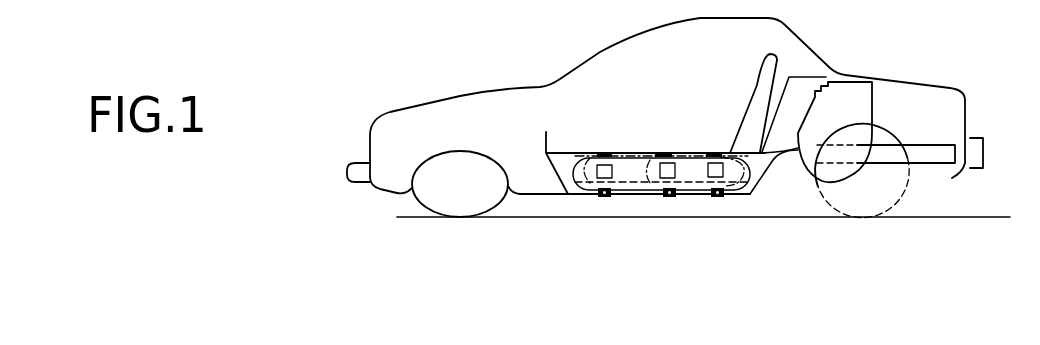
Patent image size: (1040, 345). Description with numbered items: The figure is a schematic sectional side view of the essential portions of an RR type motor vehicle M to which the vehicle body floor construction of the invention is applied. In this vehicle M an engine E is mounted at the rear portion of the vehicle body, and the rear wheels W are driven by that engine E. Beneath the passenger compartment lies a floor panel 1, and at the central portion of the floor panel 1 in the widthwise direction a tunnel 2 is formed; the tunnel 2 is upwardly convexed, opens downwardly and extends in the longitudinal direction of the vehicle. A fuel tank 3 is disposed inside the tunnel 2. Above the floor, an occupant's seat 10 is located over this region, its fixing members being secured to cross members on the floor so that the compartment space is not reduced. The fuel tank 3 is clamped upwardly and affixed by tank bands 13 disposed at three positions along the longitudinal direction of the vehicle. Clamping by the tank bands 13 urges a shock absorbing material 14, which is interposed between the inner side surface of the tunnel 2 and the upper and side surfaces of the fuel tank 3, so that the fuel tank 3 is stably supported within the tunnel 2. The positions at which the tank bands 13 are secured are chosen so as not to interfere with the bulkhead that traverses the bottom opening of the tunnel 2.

The floor panel 1 is at (623, 200).
The tunnel 2 is at (632, 151).
The fuel tank 3 is at (585, 156).
The occupant's seat 10 is at (753, 92).
The tank bands 13 is at (602, 199).
The shock absorbing material 14 is at (605, 152).
The motor vehicle M is at (844, 60).
The engine E is at (873, 97).
The rear wheels W is at (913, 182).